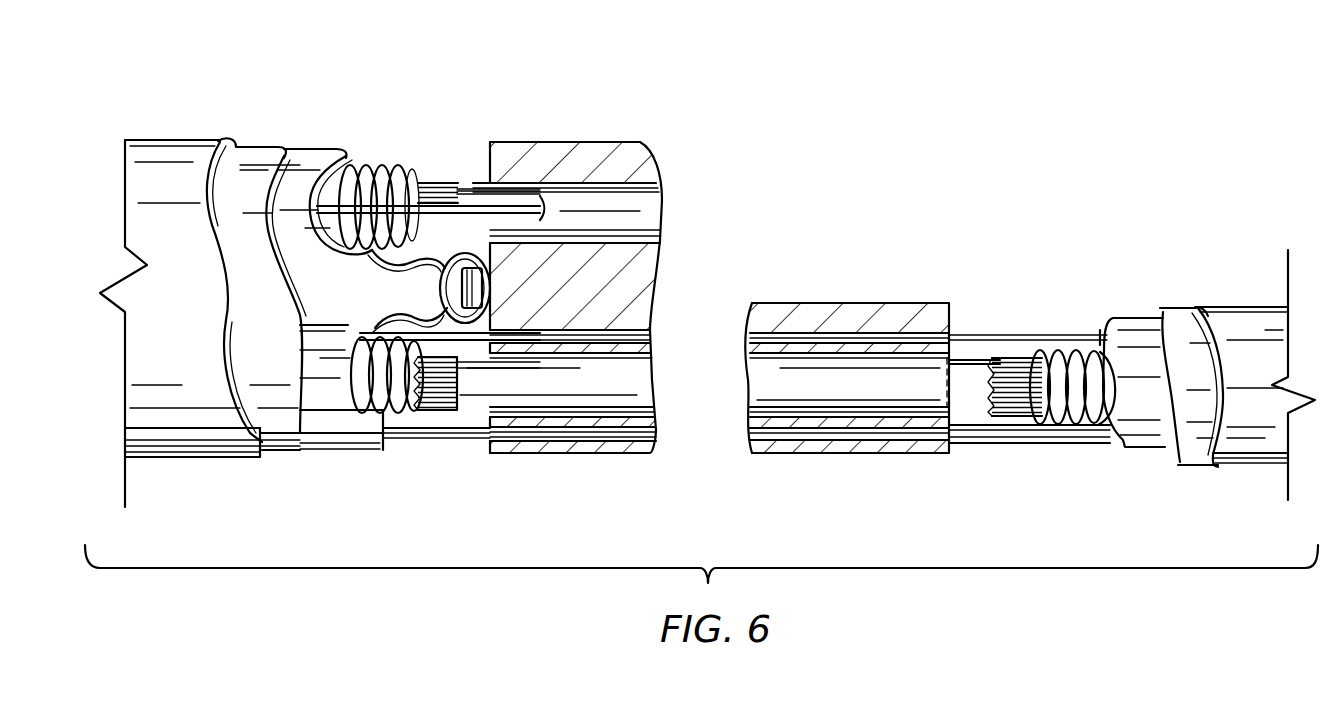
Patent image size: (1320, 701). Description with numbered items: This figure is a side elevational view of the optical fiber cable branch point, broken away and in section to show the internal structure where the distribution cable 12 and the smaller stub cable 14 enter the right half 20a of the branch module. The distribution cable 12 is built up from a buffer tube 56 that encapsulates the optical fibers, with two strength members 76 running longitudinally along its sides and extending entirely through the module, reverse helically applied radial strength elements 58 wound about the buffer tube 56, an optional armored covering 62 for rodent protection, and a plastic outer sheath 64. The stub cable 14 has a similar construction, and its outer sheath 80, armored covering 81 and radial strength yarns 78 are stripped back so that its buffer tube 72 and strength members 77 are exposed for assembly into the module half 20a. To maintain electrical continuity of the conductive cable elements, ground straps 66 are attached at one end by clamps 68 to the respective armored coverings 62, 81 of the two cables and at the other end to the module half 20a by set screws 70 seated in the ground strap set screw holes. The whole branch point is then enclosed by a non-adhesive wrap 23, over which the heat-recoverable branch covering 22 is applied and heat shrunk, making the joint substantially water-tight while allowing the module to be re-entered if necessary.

The distribution cable 12 is at (320, 443).
The stub cable 14 is at (323, 160).
The right half of branch module 20a is at (620, 140).
The branch covering 22 is at (185, 433).
The non-adhesive wrap 23 is at (282, 432).
The buffer tube 56 is at (590, 377).
The radial strength elements 58 is at (433, 417).
The armored covering 62 is at (413, 413).
The outer sheath 64 is at (352, 418).
The ground straps 66 is at (440, 258).
The clamps 68 is at (365, 250).
The set screw 70 is at (465, 285).
The buffer tube 72 is at (648, 213).
The strength members 76 is at (600, 313).
The strength members 77 is at (518, 207).
The radial strength yarns 78 is at (423, 180).
The outer sheath 80 is at (293, 167).
The armored covering 81 is at (373, 180).